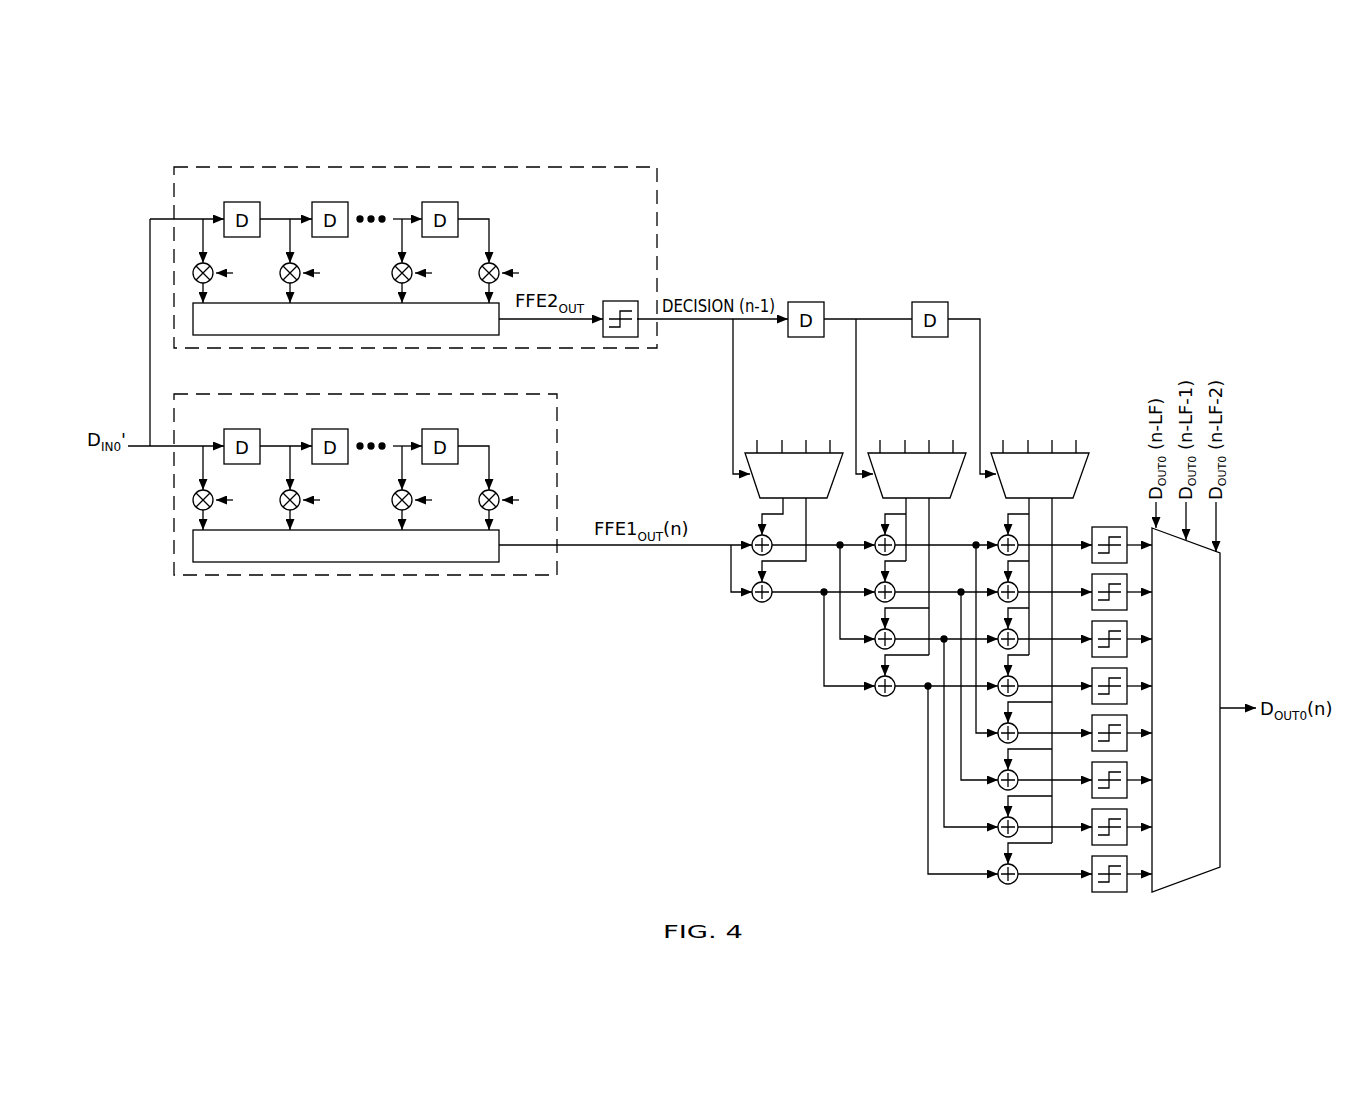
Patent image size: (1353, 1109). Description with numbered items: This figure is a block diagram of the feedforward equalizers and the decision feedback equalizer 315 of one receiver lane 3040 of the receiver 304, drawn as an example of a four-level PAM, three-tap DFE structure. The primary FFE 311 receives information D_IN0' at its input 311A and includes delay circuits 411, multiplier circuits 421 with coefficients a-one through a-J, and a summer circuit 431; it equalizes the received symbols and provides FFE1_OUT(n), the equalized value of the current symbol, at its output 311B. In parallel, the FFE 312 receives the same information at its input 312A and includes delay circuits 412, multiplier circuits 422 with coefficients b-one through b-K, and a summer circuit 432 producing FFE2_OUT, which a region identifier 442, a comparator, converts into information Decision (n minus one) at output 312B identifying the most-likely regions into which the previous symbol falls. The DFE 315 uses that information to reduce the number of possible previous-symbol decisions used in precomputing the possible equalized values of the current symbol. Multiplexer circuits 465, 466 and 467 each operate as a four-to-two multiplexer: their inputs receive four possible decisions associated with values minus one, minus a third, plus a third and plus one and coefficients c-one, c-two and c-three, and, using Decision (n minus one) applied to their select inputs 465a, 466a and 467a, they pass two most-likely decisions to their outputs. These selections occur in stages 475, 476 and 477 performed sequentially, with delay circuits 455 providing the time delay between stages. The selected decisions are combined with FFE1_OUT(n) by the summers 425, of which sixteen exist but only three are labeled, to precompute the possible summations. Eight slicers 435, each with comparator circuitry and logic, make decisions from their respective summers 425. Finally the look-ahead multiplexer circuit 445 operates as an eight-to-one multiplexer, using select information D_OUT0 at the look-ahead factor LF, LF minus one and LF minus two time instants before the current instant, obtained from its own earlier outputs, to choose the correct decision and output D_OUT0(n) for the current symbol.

The receiver 304 is at (1152, 205).
The receiver lane 3040 is at (548, 758).
The FFE 312 is at (415, 244).
The input 312A is at (191, 217).
The output 312B is at (697, 322).
The delay circuits 412 is at (243, 202).
The multiplier circuits 422 is at (210, 266).
The summer circuit 432 is at (347, 304).
The region identifier 442 is at (617, 303).
The FFE 311 is at (365, 471).
The input 311A is at (191, 444).
The output 311B is at (633, 547).
The delay circuits 411 is at (243, 429).
The multiplier circuits 421 is at (210, 493).
The summer circuit 431 is at (347, 531).
The delay circuits 455 is at (810, 302).
The select input 465a is at (733, 416).
The select input 466a is at (856, 355).
The select input 467a is at (980, 355).
The multiplexer circuit 465 is at (766, 499).
The multiplexer circuit 466 is at (889, 499).
The multiplexer circuit 467 is at (1012, 499).
The summers 425 is at (756, 603).
The stage 475 is at (762, 624).
The stage 476 is at (885, 720).
The stage 477 is at (1008, 905).
The slicers 435 is at (1108, 893).
The multiplexer circuit 445 is at (1221, 619).
The decision feedback equalizer 315 is at (803, 773).